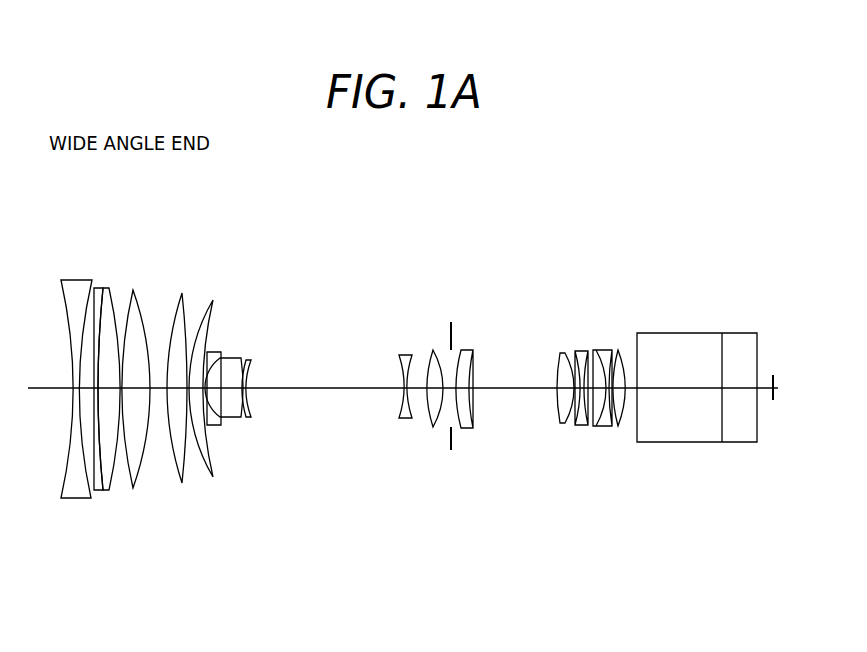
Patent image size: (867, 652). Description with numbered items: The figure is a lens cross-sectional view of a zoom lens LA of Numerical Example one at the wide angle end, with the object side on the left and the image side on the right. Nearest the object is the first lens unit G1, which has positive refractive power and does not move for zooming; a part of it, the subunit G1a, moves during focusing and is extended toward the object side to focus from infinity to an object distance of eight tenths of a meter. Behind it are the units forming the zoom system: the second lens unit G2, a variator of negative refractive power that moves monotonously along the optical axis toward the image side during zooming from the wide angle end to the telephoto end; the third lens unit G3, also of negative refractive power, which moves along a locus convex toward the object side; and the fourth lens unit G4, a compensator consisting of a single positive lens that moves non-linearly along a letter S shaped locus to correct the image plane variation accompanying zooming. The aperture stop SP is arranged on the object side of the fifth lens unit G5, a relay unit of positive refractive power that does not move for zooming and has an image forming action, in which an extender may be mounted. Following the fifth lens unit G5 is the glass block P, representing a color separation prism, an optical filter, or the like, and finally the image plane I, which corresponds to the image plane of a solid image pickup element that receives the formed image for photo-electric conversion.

The zoom lens LA is at (627, 213).
The first lens unit G1 is at (142, 354).
The subunit G1a is at (197, 366).
The second lens unit G2 is at (252, 348).
The third lens unit G3 is at (415, 352).
The fourth lens unit G4 is at (445, 337).
The fifth lens unit G5 is at (628, 338).
The aperture stop SP is at (453, 322).
The glass block P is at (762, 323).
The image plane I is at (774, 375).